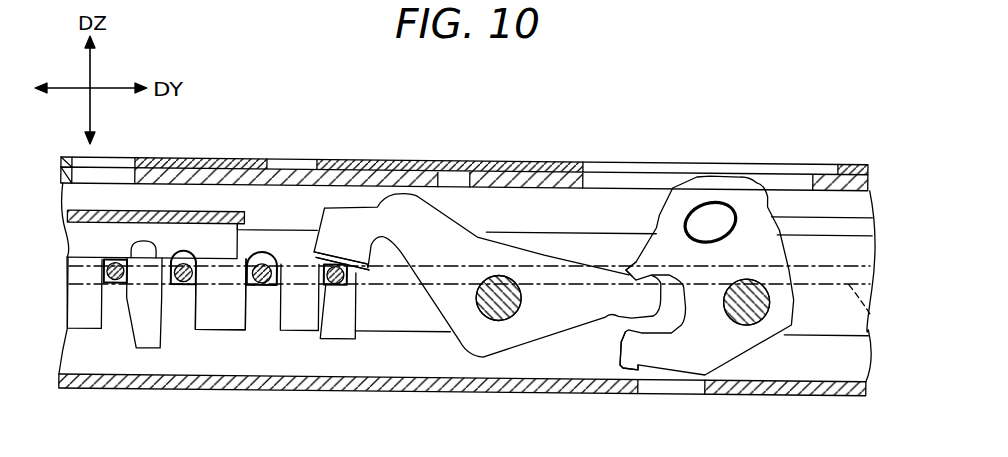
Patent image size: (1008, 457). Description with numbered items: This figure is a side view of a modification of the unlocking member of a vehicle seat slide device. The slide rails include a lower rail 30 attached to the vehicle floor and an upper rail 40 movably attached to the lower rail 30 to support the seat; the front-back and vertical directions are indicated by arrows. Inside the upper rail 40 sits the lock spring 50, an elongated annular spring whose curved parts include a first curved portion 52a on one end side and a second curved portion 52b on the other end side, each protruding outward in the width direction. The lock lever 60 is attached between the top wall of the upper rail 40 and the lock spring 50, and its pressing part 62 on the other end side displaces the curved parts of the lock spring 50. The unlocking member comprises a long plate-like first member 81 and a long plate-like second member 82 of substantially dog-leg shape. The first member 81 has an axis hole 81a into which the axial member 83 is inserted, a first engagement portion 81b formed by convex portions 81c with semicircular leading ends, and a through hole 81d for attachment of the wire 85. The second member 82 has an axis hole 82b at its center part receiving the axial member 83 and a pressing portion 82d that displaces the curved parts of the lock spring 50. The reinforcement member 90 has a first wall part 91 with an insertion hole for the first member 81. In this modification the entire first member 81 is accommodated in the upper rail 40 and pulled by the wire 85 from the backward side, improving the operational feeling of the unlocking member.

The lower rail 30 is at (125, 389).
The upper rail 40 is at (170, 157).
The lock spring 50 is at (873, 323).
The first curved portion 52a is at (118, 283).
The second curved portion 52b is at (263, 286).
The lock lever 60 is at (153, 210).
The pressing part 62 is at (223, 262).
The first member 81 is at (764, 178).
The axis hole 81a is at (768, 306).
The first engagement portion 81b is at (642, 372).
The convex portions 81c is at (627, 270).
The through hole 81d is at (691, 223).
The second member 82 is at (322, 223).
The axis hole 82b is at (517, 322).
The pressing portion 82d is at (368, 270).
The axial member 83 is at (492, 322).
The wire 85 is at (803, 215).
The reinforcement member 90 is at (830, 167).
The first wall part 91 is at (573, 160).